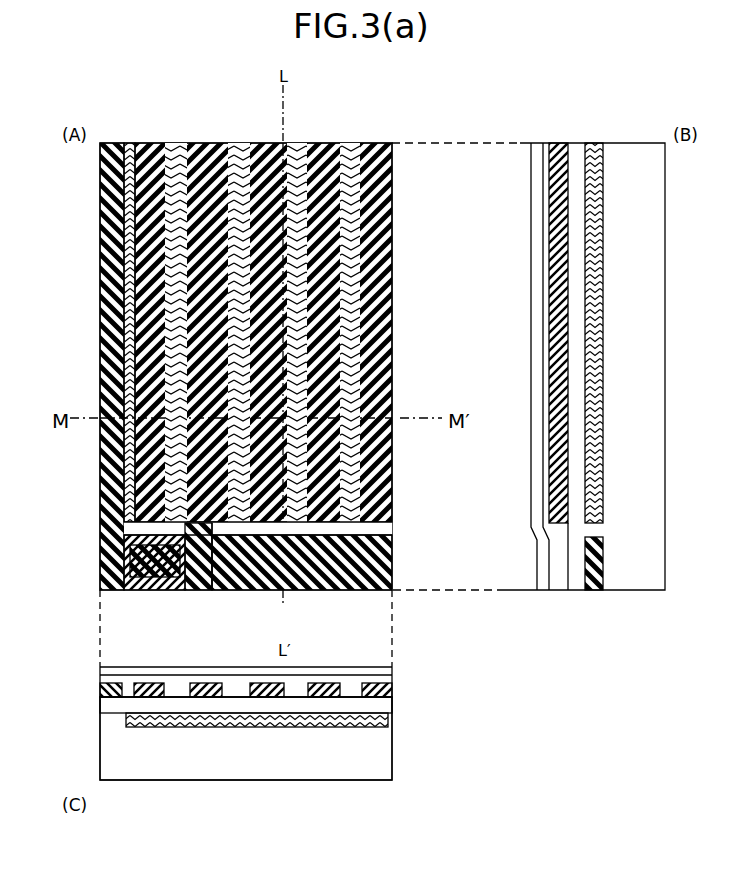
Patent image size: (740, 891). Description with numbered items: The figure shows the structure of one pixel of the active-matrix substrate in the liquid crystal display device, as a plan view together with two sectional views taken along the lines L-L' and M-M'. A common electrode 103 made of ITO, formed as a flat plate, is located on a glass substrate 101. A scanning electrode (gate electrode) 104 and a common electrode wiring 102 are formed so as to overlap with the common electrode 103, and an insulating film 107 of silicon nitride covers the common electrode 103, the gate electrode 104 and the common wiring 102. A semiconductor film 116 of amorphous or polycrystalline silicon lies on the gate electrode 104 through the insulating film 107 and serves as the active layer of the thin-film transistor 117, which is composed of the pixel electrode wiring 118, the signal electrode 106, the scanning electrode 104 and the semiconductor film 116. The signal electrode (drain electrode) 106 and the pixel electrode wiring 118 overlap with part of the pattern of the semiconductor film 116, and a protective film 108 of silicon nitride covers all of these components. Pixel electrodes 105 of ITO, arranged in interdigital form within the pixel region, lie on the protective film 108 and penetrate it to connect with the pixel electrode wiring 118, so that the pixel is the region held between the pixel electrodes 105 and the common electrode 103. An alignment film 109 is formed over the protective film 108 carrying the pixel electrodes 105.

The glass substrate 101 is at (372, 762).
The common electrode wiring 102 is at (393, 563).
The common electrode 103 is at (242, 143).
The scanning electrode (gate electrode) 104 is at (385, 590).
The pixel electrode 105 is at (326, 683).
The signal electrode (drain electrode) 106 is at (100, 510).
The insulating film 107 is at (108, 710).
The protective film 108 is at (549, 255).
The alignment film 109 is at (531, 166).
The semiconductor film 116 is at (203, 590).
The thin-film transistor 117 is at (200, 602).
The pixel electrode wiring 118 is at (233, 590).